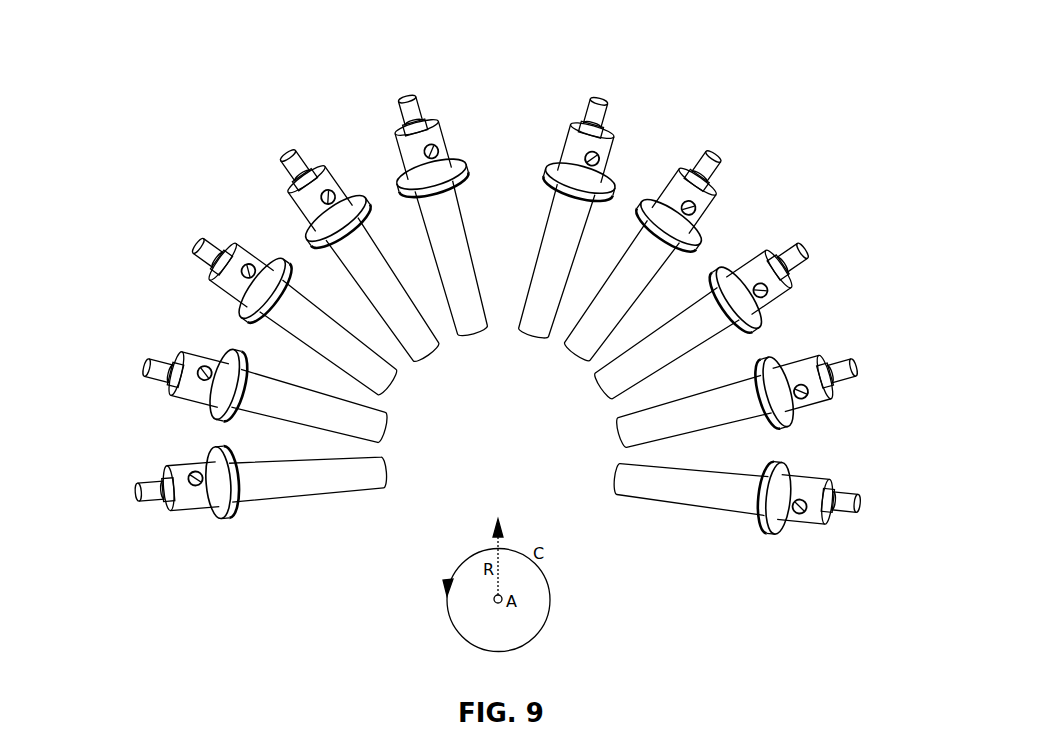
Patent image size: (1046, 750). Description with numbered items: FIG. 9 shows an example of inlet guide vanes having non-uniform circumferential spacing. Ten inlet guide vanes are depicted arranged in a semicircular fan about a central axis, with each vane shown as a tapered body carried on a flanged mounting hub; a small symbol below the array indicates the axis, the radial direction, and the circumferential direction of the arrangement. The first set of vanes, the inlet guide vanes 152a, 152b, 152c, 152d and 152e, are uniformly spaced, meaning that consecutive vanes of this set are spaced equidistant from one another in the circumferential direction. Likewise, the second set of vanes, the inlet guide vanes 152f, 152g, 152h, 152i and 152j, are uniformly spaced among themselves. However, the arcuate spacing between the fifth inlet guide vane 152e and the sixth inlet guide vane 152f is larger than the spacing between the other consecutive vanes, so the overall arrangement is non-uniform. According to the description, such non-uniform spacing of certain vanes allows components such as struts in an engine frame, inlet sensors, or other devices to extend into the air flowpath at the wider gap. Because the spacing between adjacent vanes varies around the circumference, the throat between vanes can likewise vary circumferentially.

The inlet guide vane 152a is at (138, 491).
The inlet guide vane 152b is at (146, 365).
The inlet guide vane 152c is at (200, 246).
The inlet guide vane 152d is at (284, 152).
The fifth inlet guide vane 152e is at (407, 94).
The sixth inlet guide vane 152f is at (599, 97).
The inlet guide vane 152g is at (718, 152).
The inlet guide vane 152h is at (808, 251).
The inlet guide vane 152i is at (858, 366).
The inlet guide vane 152j is at (862, 502).